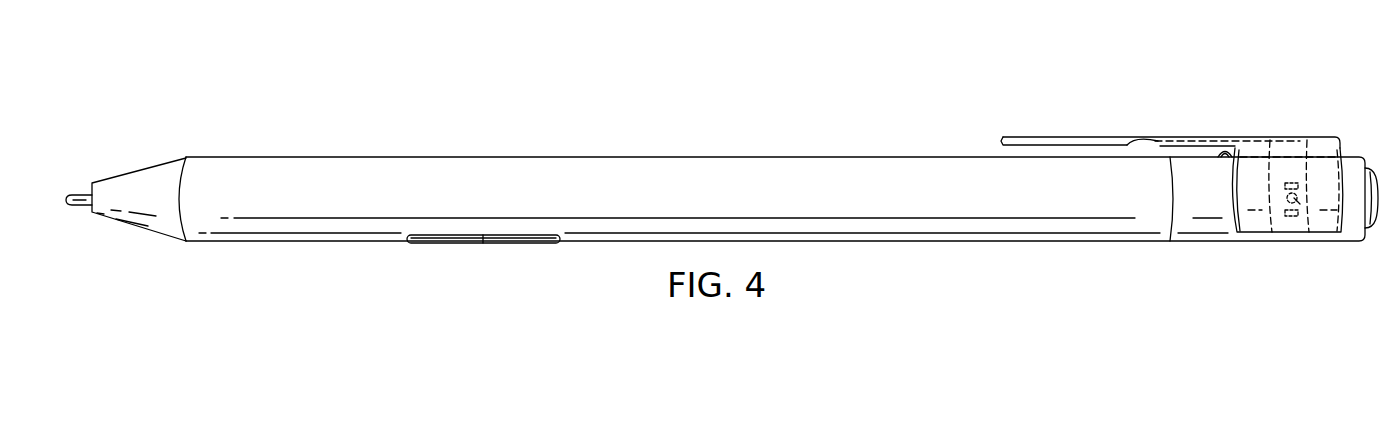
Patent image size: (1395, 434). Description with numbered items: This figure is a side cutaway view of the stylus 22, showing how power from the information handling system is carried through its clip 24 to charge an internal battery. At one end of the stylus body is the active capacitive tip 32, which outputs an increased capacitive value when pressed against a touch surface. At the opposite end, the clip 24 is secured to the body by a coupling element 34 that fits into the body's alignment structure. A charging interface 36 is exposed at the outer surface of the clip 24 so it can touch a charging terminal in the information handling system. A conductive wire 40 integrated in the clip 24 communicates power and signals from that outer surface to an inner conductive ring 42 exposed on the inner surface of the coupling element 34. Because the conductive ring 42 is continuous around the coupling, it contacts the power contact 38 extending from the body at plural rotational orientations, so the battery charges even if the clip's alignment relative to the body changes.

The stylus 22 is at (710, 157).
The clip 24 is at (1060, 137).
The active capacitive tip 32 is at (81, 207).
The coupling element 34 is at (1340, 148).
The charging interface 36 is at (1141, 137).
The power contact 38 is at (1305, 203).
The conductive wire 40 is at (1297, 136).
The conductive ring 42 is at (1290, 216).